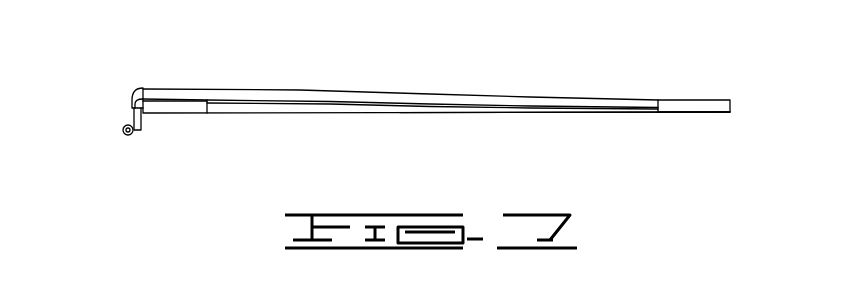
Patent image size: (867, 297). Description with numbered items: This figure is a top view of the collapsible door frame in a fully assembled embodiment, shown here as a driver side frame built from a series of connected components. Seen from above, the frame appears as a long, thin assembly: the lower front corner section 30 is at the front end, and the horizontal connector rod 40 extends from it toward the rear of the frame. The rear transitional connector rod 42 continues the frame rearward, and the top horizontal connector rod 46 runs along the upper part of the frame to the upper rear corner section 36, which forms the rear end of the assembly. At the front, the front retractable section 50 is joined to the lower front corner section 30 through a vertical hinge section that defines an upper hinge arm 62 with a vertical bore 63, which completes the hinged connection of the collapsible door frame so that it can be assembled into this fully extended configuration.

The lower front corner section 30 is at (188, 104).
The upper rear corner section 36 is at (680, 106).
The horizontal connector rod 40 is at (455, 110).
The rear transitional connector rod 42 is at (650, 113).
The top horizontal connector rod 46 is at (357, 93).
The front retractable section 50 is at (135, 90).
The upper hinge arm 62 is at (130, 135).
The vertical bore 63 is at (124, 128).